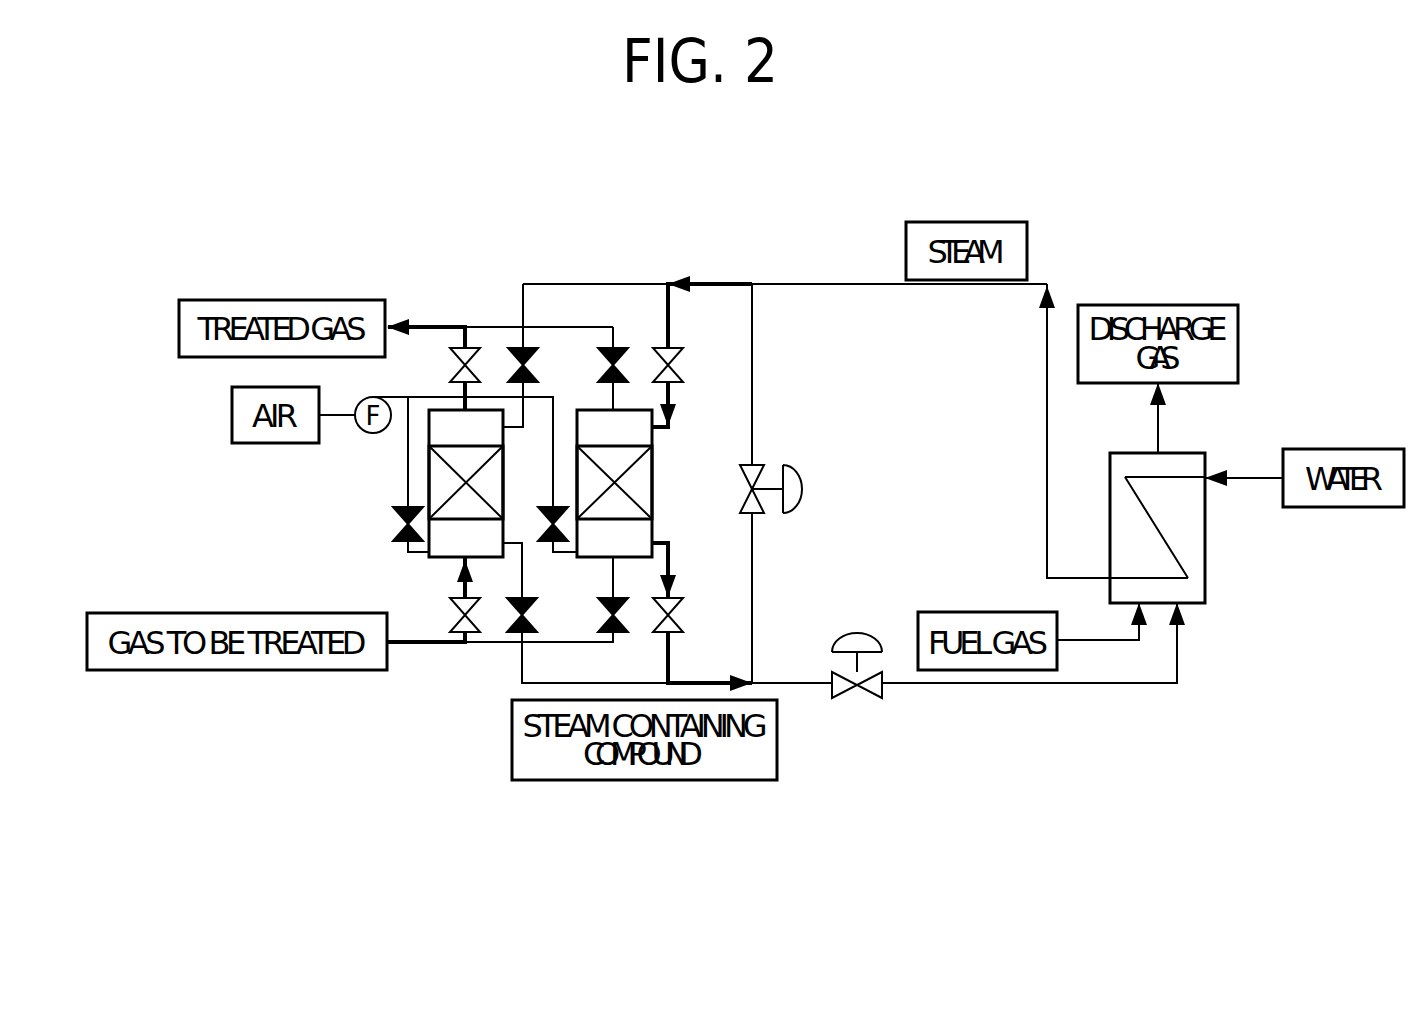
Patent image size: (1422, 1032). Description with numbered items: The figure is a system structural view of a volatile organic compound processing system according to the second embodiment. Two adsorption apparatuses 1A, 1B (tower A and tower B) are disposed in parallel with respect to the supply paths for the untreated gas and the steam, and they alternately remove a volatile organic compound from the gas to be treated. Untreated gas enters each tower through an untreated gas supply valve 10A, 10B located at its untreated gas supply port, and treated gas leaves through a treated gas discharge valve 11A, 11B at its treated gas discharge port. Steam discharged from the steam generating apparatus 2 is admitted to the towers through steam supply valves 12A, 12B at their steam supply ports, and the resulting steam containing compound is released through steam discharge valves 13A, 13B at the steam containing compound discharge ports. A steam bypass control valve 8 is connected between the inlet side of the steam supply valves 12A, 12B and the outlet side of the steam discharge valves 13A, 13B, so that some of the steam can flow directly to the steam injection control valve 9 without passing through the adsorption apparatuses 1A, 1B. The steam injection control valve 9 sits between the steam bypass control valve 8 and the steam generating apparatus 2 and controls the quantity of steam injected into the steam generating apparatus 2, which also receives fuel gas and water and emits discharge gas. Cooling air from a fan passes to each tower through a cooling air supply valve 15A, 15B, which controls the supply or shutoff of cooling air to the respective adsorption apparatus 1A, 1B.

The adsorption apparatus 1A is at (427, 477).
The adsorption apparatus 1B is at (653, 480).
The steam generating apparatus 2 is at (1205, 555).
The steam bypass control valve 8 is at (803, 489).
The steam injection control valve 9 is at (857, 634).
The untreated gas supply valve 10A is at (460, 620).
The untreated gas supply valve 10B is at (600, 625).
The treated gas discharge valve 11A is at (485, 352).
The treated gas discharge valve 11B is at (628, 352).
The steam supply valve 12A is at (510, 352).
The steam supply valve 12B is at (683, 360).
The steam discharge valve 13A is at (508, 620).
The steam discharge valve 13B is at (683, 620).
The cooling air supply valve 15A is at (400, 533).
The cooling air supply valve 15B is at (545, 532).